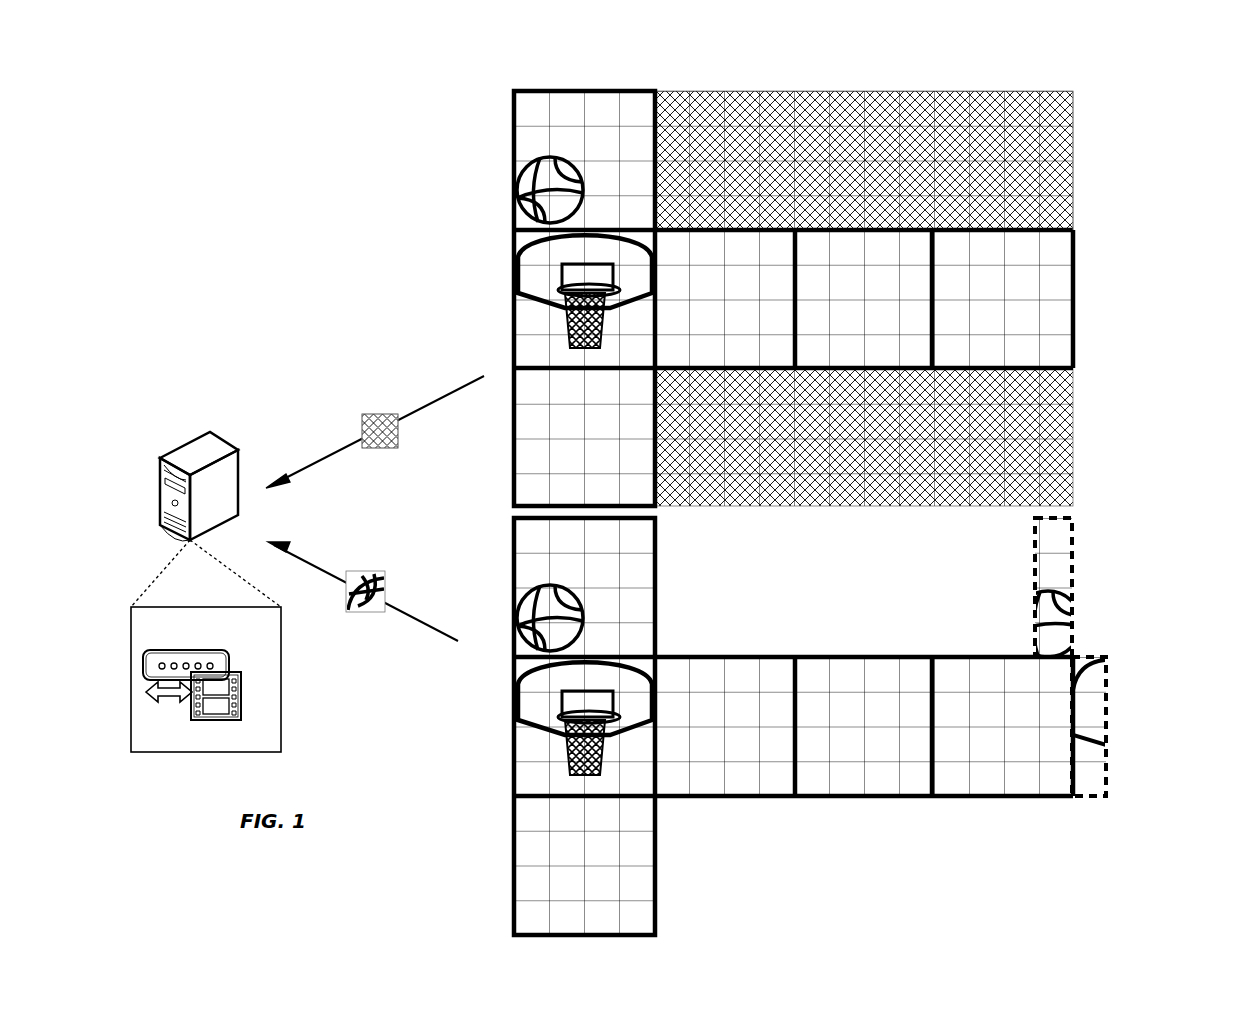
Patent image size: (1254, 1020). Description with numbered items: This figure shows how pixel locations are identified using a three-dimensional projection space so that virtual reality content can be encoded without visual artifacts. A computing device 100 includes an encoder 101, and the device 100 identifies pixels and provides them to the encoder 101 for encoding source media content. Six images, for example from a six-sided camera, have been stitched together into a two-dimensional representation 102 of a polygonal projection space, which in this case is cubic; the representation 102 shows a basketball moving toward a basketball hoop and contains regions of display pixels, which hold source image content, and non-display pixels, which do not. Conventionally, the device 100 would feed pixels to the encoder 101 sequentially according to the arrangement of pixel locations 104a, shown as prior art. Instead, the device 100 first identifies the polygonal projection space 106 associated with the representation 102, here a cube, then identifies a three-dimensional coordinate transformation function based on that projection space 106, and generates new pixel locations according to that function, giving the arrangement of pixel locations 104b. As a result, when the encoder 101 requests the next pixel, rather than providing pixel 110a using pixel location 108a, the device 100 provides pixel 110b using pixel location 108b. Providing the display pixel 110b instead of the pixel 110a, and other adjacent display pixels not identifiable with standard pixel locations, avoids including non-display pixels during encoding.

The computing device 100 is at (210, 432).
The encoder 101 is at (259, 637).
The 2D representation 102 is at (976, 90).
The arrangement of pixel locations 104a is at (1100, 506).
The arrangement of pixel locations 104b is at (1100, 518).
The polygonal projection space 106 is at (514, 91).
The pixel location 108a is at (1082, 210).
The pixel location 108b is at (1085, 638).
The pixel 110a is at (375, 414).
The pixel 110b is at (360, 571).